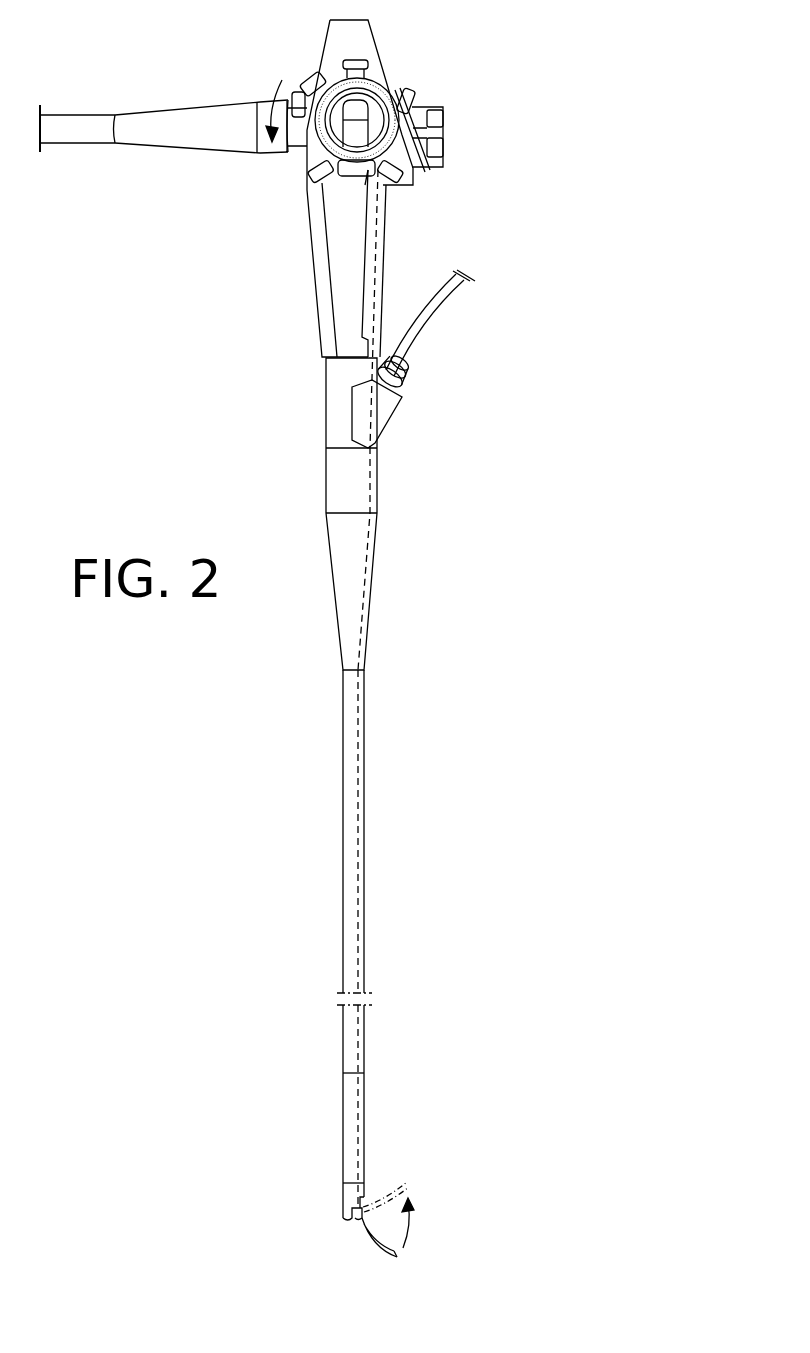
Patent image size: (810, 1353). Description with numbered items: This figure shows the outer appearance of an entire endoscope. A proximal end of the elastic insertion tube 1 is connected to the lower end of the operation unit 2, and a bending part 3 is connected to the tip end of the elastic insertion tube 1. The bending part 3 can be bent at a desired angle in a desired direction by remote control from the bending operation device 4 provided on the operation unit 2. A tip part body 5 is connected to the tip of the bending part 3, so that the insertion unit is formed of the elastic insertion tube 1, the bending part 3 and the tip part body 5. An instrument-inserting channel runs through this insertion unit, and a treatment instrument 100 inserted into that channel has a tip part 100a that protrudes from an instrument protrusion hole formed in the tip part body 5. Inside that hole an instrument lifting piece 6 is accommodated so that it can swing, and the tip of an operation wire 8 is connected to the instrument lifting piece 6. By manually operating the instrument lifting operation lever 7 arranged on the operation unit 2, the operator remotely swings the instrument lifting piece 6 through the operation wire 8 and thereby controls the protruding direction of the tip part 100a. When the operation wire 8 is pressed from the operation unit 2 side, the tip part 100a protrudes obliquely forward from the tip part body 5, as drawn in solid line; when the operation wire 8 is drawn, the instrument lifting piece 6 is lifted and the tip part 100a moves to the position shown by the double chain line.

The elastic insertion tube 1 is at (342, 847).
The operation unit 2 is at (310, 253).
The bending part 3 is at (343, 1106).
The bending operation device 4 is at (380, 88).
The tip part body 5 is at (343, 1197).
The instrument lifting piece 6 is at (355, 1218).
The instrument lifting operation lever 7 is at (305, 80).
The operation wire 8 is at (362, 583).
The treatment instrument 100 is at (433, 313).
The tip part of treatment instrument 100a is at (395, 1260).